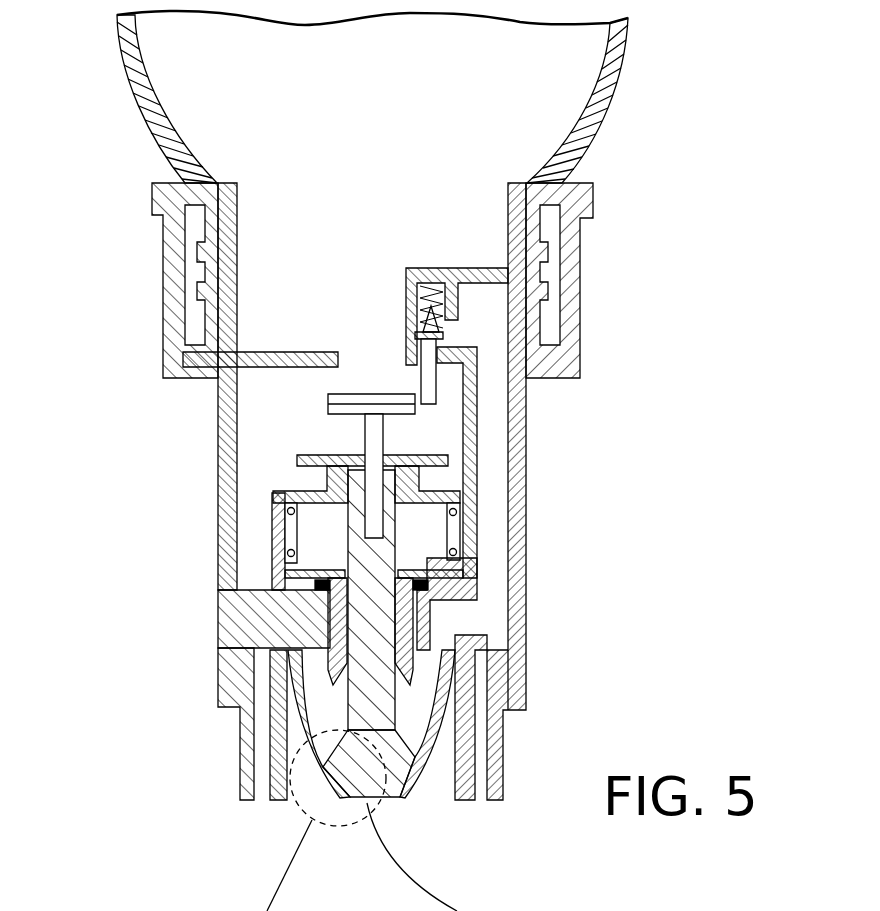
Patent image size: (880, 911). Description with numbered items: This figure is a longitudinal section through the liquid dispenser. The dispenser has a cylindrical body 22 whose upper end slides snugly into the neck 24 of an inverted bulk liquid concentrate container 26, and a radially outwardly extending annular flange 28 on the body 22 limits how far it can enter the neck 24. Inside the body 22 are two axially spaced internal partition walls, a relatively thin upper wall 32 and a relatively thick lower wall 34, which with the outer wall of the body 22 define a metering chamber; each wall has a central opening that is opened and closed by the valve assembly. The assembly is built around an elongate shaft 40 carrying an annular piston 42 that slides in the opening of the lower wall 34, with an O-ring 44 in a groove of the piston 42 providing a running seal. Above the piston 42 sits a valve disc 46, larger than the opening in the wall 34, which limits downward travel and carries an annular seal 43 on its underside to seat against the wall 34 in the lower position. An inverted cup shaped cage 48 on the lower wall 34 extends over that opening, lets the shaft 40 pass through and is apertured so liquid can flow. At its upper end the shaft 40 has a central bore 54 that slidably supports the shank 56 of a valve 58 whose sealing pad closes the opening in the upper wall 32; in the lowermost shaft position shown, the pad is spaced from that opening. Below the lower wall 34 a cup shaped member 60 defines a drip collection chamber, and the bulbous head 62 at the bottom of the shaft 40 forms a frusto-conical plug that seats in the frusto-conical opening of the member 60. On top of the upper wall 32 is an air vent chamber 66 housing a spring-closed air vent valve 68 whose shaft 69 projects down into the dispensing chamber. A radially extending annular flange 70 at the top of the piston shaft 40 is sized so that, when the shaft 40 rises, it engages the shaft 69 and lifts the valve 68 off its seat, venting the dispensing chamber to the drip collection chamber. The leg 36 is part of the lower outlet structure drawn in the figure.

The cylindrical body 22 is at (527, 655).
The neck 24 is at (165, 210).
The bulk liquid concentrate container 26 is at (150, 62).
The annular flange 28 is at (575, 357).
The upper wall 32 is at (278, 352).
The lower wall 34 is at (222, 610).
The outlet leg 36 is at (480, 775).
The shaft 40 is at (372, 560).
The annular piston 42 is at (410, 690).
The annular seal 43 is at (462, 600).
The O-ring 44 is at (235, 665).
The disc 46 is at (273, 535).
The cage 48 is at (273, 557).
The central bore 54 is at (382, 523).
The shank 56 is at (383, 440).
The valve 58 is at (327, 402).
The cup shaped member 60 is at (375, 795).
The bulbous head 62 is at (305, 757).
The air vent chamber 66 is at (425, 268).
The air vent valve 68 is at (412, 350).
The shaft 69 is at (437, 400).
The annular flange 70 is at (297, 463).